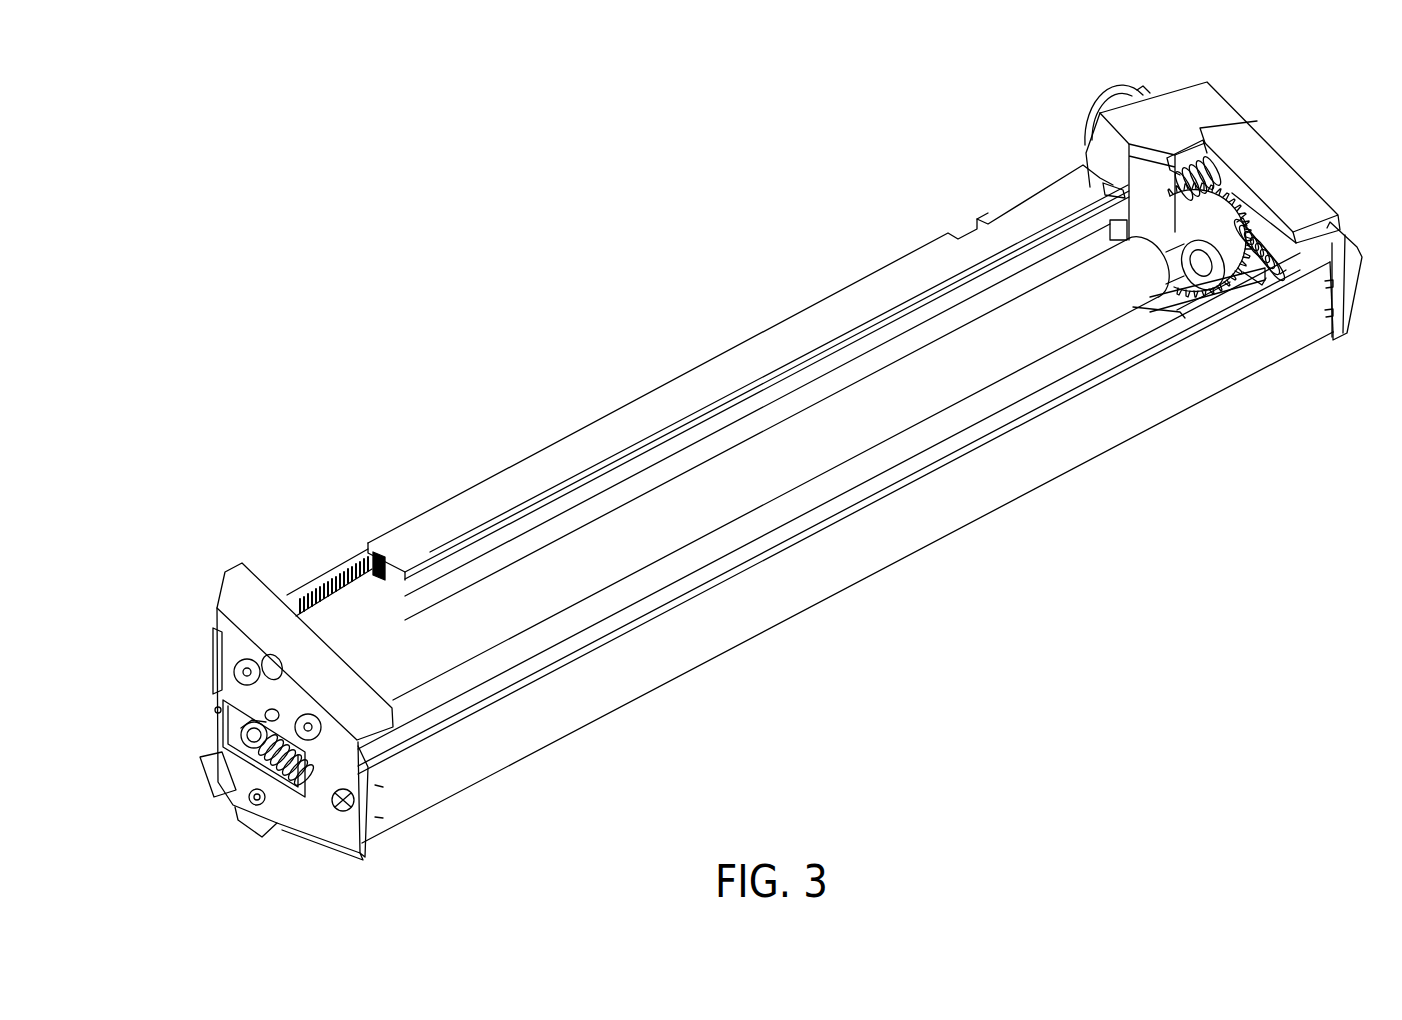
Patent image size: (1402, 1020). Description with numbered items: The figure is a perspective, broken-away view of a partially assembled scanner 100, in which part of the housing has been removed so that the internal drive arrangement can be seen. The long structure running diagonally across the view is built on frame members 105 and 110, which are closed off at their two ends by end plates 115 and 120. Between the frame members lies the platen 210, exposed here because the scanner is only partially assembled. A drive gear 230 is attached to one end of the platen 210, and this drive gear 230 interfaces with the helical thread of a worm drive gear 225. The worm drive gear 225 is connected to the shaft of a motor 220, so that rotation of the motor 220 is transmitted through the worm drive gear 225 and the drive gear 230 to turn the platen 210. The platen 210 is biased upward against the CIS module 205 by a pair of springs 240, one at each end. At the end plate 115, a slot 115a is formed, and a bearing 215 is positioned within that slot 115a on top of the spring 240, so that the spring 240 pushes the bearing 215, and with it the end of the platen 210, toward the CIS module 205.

The scanner 100 is at (1096, 788).
The frame member 105 is at (930, 262).
The frame member 110 is at (746, 612).
The end plate 115 is at (246, 593).
The slot 115a is at (215, 712).
The end plate 120 is at (1208, 110).
The CIS module 205 is at (727, 427).
The platen 210 is at (492, 630).
The bearing 215 is at (240, 742).
The motor 220 is at (1090, 104).
The worm drive gear 225 is at (1187, 145).
The drive gear 230 is at (1247, 217).
The spring 240 is at (278, 777).